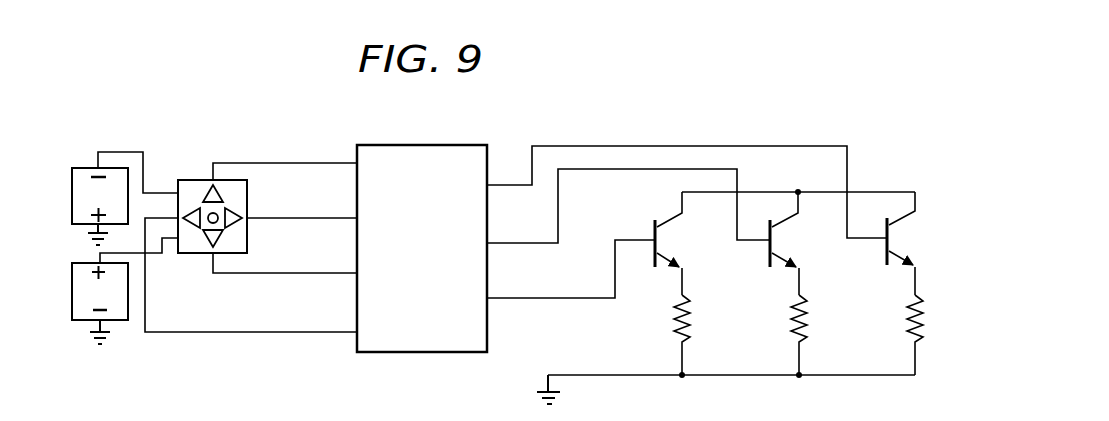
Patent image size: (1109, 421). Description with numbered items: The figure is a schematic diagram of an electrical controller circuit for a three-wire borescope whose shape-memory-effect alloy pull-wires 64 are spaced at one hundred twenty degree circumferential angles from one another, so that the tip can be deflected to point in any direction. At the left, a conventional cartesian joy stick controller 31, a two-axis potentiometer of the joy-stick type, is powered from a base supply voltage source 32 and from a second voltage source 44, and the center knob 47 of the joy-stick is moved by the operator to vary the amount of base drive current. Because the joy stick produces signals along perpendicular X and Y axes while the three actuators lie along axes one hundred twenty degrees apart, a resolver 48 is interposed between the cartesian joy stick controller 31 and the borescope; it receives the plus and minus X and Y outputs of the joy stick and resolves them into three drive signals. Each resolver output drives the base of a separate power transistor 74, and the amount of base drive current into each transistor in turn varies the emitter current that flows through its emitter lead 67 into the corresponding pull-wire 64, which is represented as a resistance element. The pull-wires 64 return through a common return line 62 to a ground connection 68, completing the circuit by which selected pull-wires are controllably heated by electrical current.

The negative bias voltage source -VB 44 is at (83, 167).
The base supply voltage source 32 is at (123, 322).
The two-axis potentiometer of the joy-stick type 31 is at (250, 219).
The joystick center/knob 47 is at (210, 213).
The resolver 48 is at (489, 162).
The transistor 74 is at (654, 231).
The transistor emitter lead 67 is at (684, 283).
The SME alloy pull-wires 64 is at (686, 322).
The common return line 62 is at (730, 377).
The ground connection 68 is at (608, 377).